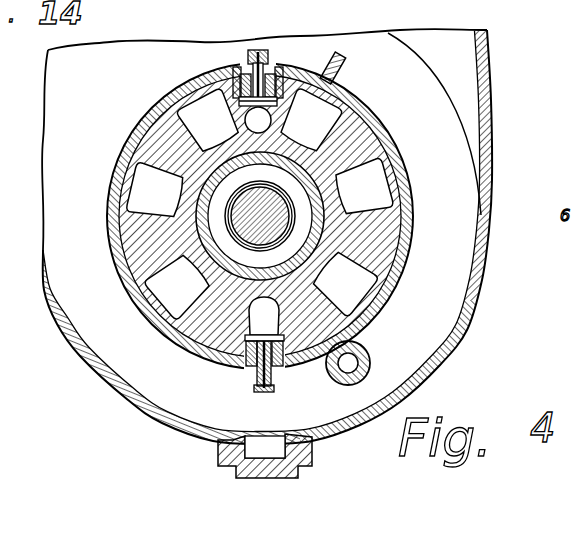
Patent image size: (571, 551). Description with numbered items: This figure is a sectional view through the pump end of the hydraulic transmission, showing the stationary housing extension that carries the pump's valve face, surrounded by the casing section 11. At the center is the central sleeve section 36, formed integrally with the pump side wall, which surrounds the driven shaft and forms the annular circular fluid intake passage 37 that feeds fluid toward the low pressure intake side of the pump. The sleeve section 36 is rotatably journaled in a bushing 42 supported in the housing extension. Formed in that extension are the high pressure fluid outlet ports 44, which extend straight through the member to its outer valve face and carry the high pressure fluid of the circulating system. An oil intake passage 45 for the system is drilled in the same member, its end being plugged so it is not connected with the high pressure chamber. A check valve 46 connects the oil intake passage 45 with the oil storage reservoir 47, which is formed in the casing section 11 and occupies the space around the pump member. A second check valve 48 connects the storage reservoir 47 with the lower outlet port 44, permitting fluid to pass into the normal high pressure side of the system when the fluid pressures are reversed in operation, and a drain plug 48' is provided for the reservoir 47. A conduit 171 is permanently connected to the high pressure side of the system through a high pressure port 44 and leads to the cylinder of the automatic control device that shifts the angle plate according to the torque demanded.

The casing section 11 is at (491, 90).
The central sleeve section 36 is at (380, 252).
The annular circular fluid intake passage 37 is at (228, 200).
The bushing 42 is at (362, 335).
The high pressure fluid outlet ports 44 is at (200, 117).
The oil intake passage 45 is at (345, 58).
The check valve 46 is at (283, 66).
The oil storage reservoir 47 is at (453, 208).
The check valve 48 is at (236, 348).
The drain plug 48' is at (238, 456).
The conduit 171 is at (322, 73).